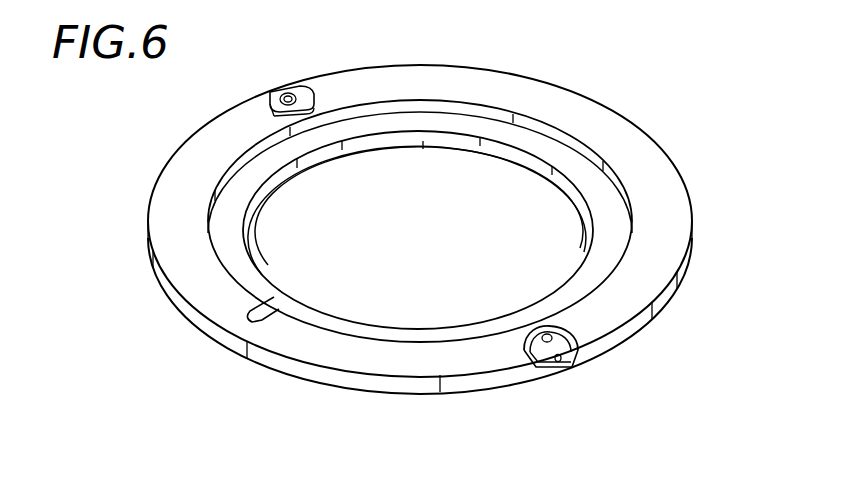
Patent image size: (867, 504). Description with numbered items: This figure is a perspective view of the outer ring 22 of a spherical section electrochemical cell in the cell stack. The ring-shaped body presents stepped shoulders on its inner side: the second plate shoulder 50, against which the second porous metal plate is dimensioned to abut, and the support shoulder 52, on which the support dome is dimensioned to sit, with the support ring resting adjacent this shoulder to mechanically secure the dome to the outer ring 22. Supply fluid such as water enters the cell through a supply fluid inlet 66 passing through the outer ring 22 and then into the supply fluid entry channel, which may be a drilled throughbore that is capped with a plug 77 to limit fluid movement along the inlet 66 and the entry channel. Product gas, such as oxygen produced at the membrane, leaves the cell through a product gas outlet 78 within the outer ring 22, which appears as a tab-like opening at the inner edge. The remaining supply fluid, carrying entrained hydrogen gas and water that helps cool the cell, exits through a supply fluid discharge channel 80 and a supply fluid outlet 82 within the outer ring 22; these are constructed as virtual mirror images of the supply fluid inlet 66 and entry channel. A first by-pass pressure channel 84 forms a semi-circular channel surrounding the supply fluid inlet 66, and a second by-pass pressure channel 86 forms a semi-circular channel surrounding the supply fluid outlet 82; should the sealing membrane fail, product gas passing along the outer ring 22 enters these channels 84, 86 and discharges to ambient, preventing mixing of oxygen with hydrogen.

The outer ring 22 is at (646, 172).
The second plate shoulder 50 is at (577, 225).
The support shoulder 52 is at (470, 157).
The supply fluid inlet 66 is at (547, 318).
The plug 77 is at (562, 360).
The product gas outlet 78 is at (273, 286).
The supply fluid discharge channel 80 is at (320, 165).
The supply fluid outlet 82 is at (284, 88).
The first by-pass pressure channel 84 is at (547, 367).
The second by-pass pressure channel 86 is at (268, 95).